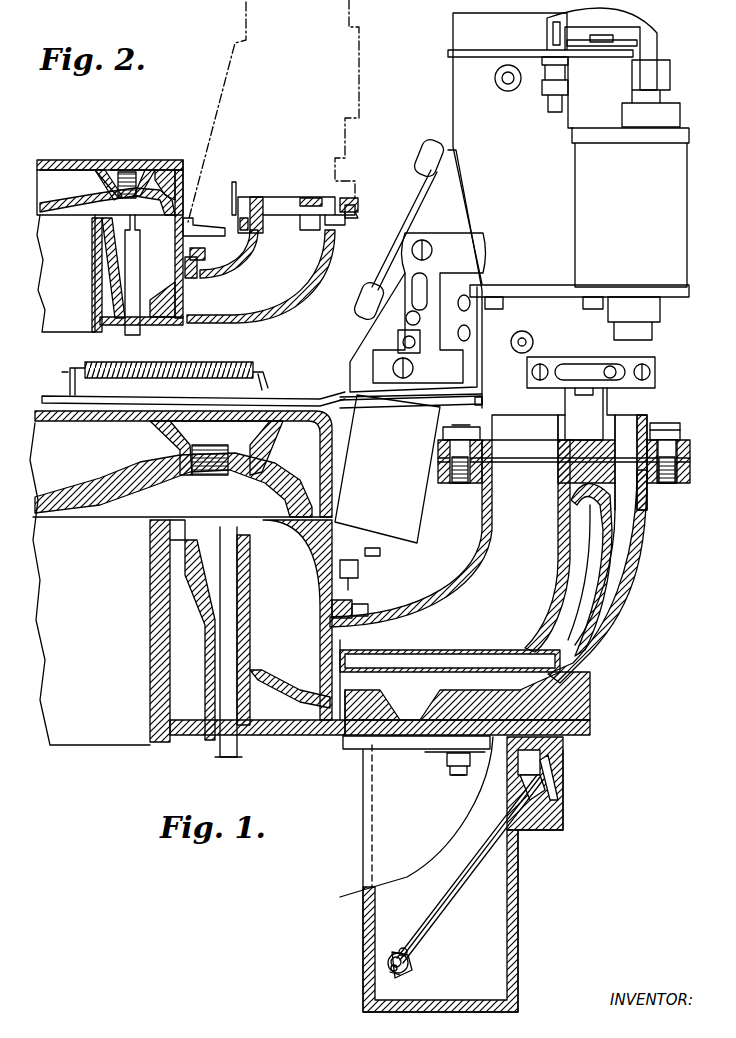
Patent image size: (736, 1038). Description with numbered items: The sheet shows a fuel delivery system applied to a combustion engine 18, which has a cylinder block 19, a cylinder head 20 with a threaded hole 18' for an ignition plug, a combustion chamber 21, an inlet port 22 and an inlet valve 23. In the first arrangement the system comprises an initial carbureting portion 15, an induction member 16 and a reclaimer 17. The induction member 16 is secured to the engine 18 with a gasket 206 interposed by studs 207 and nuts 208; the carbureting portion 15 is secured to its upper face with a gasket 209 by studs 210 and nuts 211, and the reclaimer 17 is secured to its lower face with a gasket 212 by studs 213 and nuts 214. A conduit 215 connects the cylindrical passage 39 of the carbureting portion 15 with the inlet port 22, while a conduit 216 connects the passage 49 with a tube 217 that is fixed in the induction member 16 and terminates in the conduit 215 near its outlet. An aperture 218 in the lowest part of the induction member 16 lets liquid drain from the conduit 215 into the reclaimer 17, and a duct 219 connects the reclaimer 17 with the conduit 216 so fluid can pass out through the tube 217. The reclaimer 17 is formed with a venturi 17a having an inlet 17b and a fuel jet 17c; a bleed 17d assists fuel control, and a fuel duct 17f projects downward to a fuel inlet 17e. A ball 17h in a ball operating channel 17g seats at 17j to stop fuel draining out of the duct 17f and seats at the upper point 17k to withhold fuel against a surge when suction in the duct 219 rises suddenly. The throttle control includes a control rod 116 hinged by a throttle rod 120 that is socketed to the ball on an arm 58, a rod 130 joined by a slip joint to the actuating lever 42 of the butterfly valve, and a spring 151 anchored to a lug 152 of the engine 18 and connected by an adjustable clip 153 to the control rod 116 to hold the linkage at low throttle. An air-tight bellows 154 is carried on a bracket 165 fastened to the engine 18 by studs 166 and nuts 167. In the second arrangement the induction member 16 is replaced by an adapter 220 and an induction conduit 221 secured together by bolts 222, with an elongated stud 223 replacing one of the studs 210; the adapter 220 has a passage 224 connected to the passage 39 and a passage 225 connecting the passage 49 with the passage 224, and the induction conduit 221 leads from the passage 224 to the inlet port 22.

In FIG. 2, the carbureting portion 15 is at (222, 76).
In FIG. 1, the carbureting portion 15 is at (555, 260).
In FIG. 1, the induction member 16 is at (475, 560).
In FIG. 1, the reclaimer 17 is at (363, 889).
In FIG. 1, the venturi 17a is at (565, 750).
In FIG. 1, the inlet 17b is at (510, 788).
In FIG. 1, the fuel jet 17c is at (560, 765).
In FIG. 1, the bleed 17d is at (512, 800).
In FIG. 1, the fuel inlet 17e is at (393, 975).
In FIG. 1, the fuel duct 17f is at (465, 897).
In FIG. 1, the ball operating channel 17g is at (412, 965).
In FIG. 1, the ball 17h is at (392, 957).
In FIG. 1, the ball seat 17j is at (391, 969).
In FIG. 1, the upper seating point 17k is at (406, 948).
In FIG. 2, the combustion engine 18 is at (97, 239).
In FIG. 1, the combustion engine 18 is at (170, 468).
In FIG. 2, the threaded hole 18' is at (125, 178).
In FIG. 1, the threaded hole 18' is at (216, 448).
In FIG. 2, the cylinder block 19 is at (69, 273).
In FIG. 1, the cylinder block 19 is at (163, 631).
In FIG. 2, the cylinder head 20 is at (110, 178).
In FIG. 1, the cylinder head 20 is at (90, 584).
In FIG. 2, the combustion chamber 21 is at (107, 192).
In FIG. 1, the combustion chamber 21 is at (173, 485).
In FIG. 2, the inlet port 22 is at (141, 271).
In FIG. 1, the inlet port 22 is at (257, 627).
In FIG. 2, the inlet valve 23 is at (133, 220).
In FIG. 1, the inlet valve 23 is at (232, 760).
In FIG. 1, the cylindrical passage 39 is at (525, 429).
In FIG. 1, the actuating lever 42 is at (486, 405).
In FIG. 1, the passage 49 is at (631, 462).
In FIG. 1, the arm 58 is at (563, 402).
In FIG. 1, the control rod 116 is at (316, 398).
In FIG. 1, the throttle rod 120 is at (448, 408).
In FIG. 1, the rod 130 is at (470, 396).
In FIG. 1, the spring 151 is at (253, 366).
In FIG. 1, the lug 152 is at (60, 376).
In FIG. 1, the adjustable clip 153 is at (272, 390).
In FIG. 1, the air-tight bellows 154 is at (387, 469).
In FIG. 2, the bracket 165 is at (203, 244).
In FIG. 1, the bracket 165 is at (400, 552).
In FIG. 1, the studs 166 is at (358, 568).
In FIG. 1, the nuts 167 is at (352, 590).
In FIG. 1, the gasket 206 is at (345, 740).
In FIG. 1, the studs 207 is at (368, 610).
In FIG. 1, the nuts 208 is at (360, 604).
In FIG. 1, the gasket 209 is at (690, 460).
In FIG. 2, the studs 210 is at (357, 210).
In FIG. 1, the studs 210 is at (460, 483).
In FIG. 1, the nuts 211 is at (682, 430).
In FIG. 1, the gasket 212 is at (563, 742).
In FIG. 1, the studs 213 is at (458, 776).
In FIG. 1, the nuts 214 is at (438, 755).
In FIG. 1, the conduit 215 is at (537, 546).
In FIG. 1, the conduit 216 is at (612, 520).
In FIG. 1, the tube 217 is at (450, 680).
In FIG. 1, the aperture 218 is at (392, 712).
In FIG. 1, the duct 219 is at (590, 566).
In FIG. 2, the adapter 220 is at (347, 222).
In FIG. 2, the induction conduit 221 is at (260, 276).
In FIG. 2, the bolts 222 is at (320, 232).
In FIG. 2, the elongated stud 223 is at (244, 230).
In FIG. 2, the passage 224 is at (296, 215).
In FIG. 2, the passage 225 is at (330, 226).